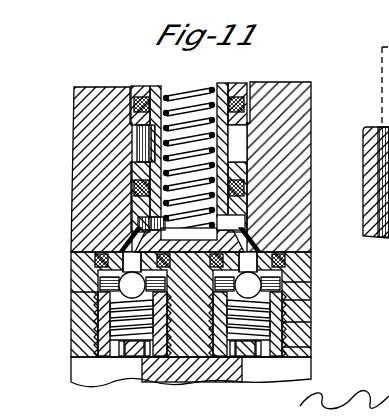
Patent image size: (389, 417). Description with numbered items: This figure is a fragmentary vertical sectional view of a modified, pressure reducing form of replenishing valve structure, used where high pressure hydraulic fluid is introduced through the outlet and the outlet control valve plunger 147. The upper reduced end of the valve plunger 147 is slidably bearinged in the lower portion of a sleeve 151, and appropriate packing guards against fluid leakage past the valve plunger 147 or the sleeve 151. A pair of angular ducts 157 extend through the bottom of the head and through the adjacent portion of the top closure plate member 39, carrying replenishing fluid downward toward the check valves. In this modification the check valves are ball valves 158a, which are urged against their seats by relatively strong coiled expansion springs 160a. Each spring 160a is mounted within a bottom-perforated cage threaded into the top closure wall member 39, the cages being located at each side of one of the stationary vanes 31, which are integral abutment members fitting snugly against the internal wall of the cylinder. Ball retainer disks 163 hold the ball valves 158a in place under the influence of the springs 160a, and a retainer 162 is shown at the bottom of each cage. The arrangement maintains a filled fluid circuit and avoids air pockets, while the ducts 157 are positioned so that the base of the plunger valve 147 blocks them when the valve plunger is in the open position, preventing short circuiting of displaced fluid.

The valve plunger 147 is at (296, 152).
The sleeve 151 is at (249, 83).
The angular ducts 157 is at (130, 236).
The ball valves 158a is at (100, 250).
The ball retainer disks 163 is at (102, 291).
The coiled expansion spring 160a is at (310, 322).
The spring retainer 162 is at (310, 350).
The top closure plate member 39 is at (74, 331).
The stationary vanes 31 is at (161, 381).